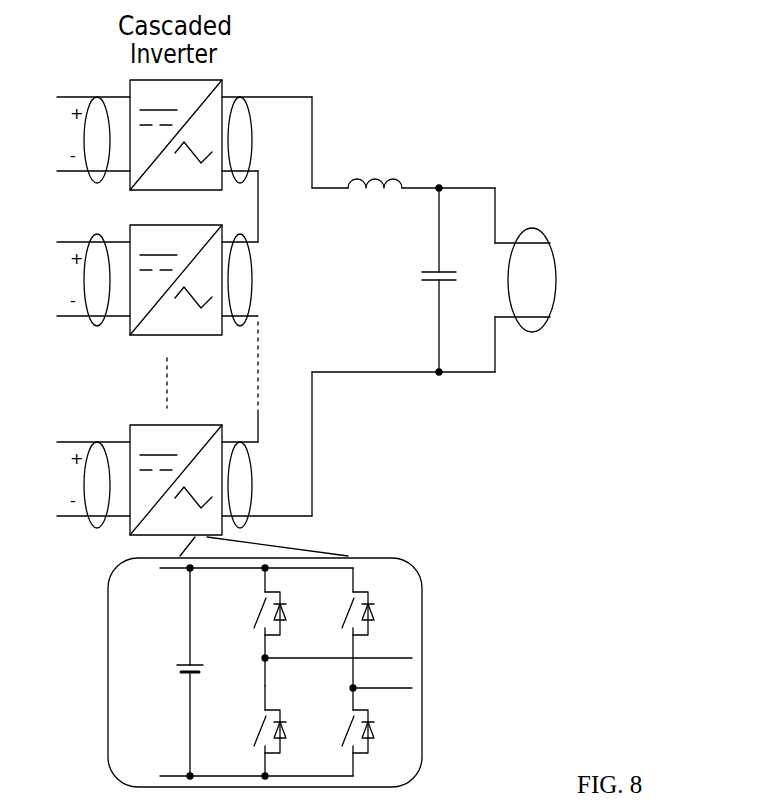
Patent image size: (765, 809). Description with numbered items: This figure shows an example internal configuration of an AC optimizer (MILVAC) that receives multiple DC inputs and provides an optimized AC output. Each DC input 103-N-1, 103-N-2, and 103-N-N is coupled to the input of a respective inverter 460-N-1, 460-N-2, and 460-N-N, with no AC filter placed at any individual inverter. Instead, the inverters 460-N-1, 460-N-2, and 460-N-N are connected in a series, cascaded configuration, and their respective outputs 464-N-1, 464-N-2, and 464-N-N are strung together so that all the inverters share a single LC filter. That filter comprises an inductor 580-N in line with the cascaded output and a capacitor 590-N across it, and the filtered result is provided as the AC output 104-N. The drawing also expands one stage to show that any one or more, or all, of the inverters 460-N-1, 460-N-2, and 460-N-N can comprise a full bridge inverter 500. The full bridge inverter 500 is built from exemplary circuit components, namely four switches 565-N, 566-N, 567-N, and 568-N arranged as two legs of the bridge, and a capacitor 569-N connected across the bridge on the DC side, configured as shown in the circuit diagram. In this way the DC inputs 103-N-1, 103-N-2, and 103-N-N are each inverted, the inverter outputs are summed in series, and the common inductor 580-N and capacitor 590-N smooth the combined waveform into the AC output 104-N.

The inverter 460-N-1 is at (140, 79).
The inverter 460-N-2 is at (177, 336).
The inverter 460-N-N is at (157, 424).
The DC input 103-N-1 is at (97, 97).
The DC input 103-N-2 is at (97, 236).
The DC input 103-N-N is at (97, 442).
The inverter output (first stage) 464-N-1 is at (240, 97).
The inverter output (second stage) 464-N-2 is at (240, 236).
The inverter output (Nth stage) 464-N-N is at (240, 442).
The inductor 580-N is at (401, 167).
The capacitor 590-N is at (415, 268).
The AC output 104-N is at (532, 228).
The full bridge inverter 500 is at (348, 556).
The switch 565-N is at (248, 618).
The switch 566-N is at (254, 726).
The switch 567-N is at (343, 620).
The switch 568-N is at (343, 728).
The capacitor 569-N is at (170, 656).